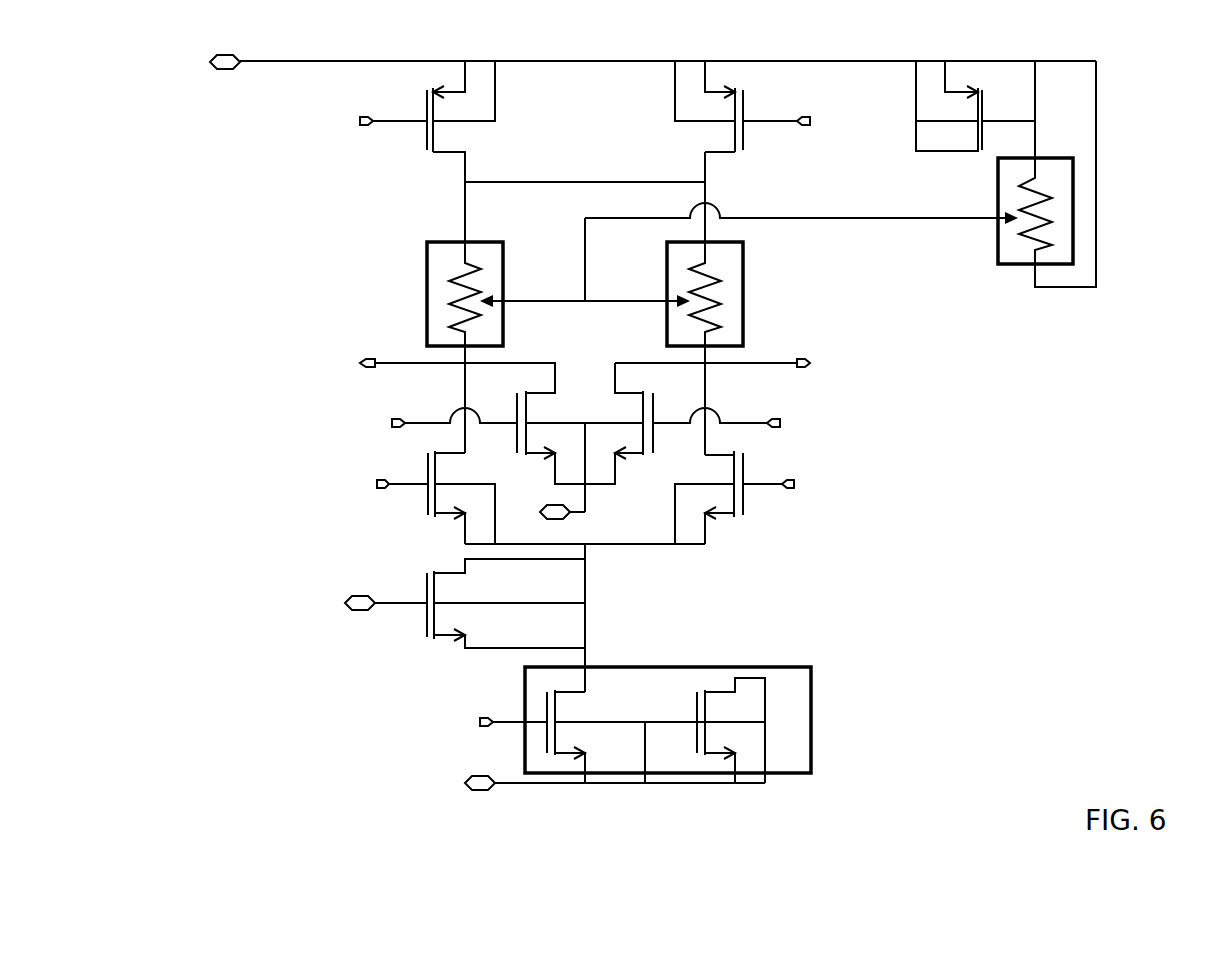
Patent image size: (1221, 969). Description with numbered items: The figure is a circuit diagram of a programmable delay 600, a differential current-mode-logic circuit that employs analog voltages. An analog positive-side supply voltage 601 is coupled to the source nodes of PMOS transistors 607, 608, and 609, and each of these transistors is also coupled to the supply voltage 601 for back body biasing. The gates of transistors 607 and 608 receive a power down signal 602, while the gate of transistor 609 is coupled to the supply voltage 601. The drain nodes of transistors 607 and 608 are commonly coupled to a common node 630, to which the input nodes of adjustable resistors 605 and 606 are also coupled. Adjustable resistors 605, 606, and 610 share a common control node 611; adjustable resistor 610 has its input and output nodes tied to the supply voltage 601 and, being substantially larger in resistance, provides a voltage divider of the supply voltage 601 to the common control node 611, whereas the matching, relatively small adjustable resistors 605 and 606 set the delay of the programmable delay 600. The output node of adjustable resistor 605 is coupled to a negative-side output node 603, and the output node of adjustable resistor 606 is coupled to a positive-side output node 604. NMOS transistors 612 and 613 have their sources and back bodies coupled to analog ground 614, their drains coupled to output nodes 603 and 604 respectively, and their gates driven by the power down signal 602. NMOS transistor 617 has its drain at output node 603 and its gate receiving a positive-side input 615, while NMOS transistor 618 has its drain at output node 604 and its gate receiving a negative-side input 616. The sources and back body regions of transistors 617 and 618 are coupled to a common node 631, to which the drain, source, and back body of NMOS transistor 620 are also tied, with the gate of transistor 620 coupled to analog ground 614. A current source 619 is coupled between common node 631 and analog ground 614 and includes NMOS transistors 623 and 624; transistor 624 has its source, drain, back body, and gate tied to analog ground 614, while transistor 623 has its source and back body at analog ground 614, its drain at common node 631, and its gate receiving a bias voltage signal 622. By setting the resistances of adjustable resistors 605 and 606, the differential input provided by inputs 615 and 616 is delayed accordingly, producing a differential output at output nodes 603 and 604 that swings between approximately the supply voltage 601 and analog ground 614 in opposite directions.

The programmable delay 600 is at (188, 802).
The analog positive-side supply voltage (AVDD) 601 is at (208, 66).
The power down signal 602 is at (357, 125).
The output node (output-N) 603 is at (360, 367).
The output node (output-P) 604 is at (813, 365).
The adjustable resistor 605 is at (426, 305).
The adjustable resistor 606 is at (747, 295).
The PMOS transistor 607 is at (447, 138).
The PMOS transistor 608 is at (723, 140).
The PMOS transistor 609 is at (960, 155).
The adjustable resistor 610 is at (997, 252).
The common control node 611 is at (585, 223).
The NMOS transistor 612 is at (528, 412).
The NMOS transistor 613 is at (642, 457).
The analog ground 614 is at (540, 500).
The positive side input (input-P) 615 is at (377, 487).
The negative side input (input-N) 616 is at (795, 487).
The NMOS transistor 617 is at (452, 513).
The NMOS transistor 618 is at (722, 515).
The current source 619 is at (813, 690).
The NMOS transistor 620 is at (443, 592).
The bias voltage signal 622 is at (477, 725).
The NMOS transistor 623 is at (558, 710).
The NMOS transistor 624 is at (697, 707).
The common node 630 is at (555, 177).
The common node 631 is at (620, 543).